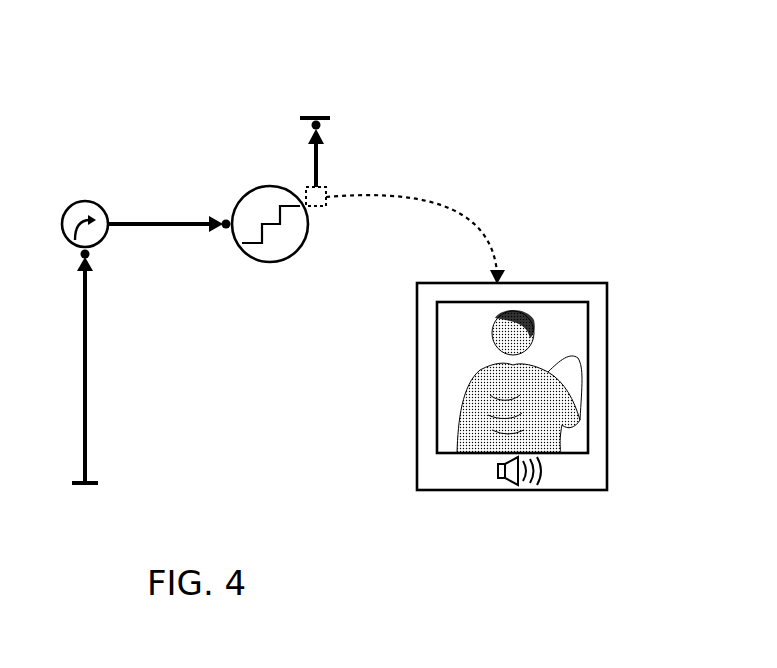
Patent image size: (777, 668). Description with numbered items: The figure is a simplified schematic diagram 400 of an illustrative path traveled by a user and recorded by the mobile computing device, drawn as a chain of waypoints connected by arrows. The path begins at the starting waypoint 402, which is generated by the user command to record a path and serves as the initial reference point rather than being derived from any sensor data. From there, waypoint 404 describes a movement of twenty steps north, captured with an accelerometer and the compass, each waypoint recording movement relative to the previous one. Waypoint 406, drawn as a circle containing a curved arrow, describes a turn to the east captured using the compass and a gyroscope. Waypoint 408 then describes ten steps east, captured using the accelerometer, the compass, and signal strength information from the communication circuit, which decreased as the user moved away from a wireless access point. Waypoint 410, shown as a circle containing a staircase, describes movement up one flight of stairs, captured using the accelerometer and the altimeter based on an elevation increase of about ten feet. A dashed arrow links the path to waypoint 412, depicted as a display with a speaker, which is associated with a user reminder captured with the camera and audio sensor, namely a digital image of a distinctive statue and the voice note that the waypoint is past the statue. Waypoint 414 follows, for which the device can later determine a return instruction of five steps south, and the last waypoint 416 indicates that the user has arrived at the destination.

The diagram 400 is at (644, 94).
The starting waypoint 402 is at (76, 494).
The waypoint 404 is at (79, 254).
The waypoint 406 is at (83, 201).
The waypoint 408 is at (226, 220).
The waypoint 410 is at (265, 262).
The waypoint 412 is at (417, 315).
The waypoint 414 is at (312, 126).
The last waypoint 416 is at (323, 106).